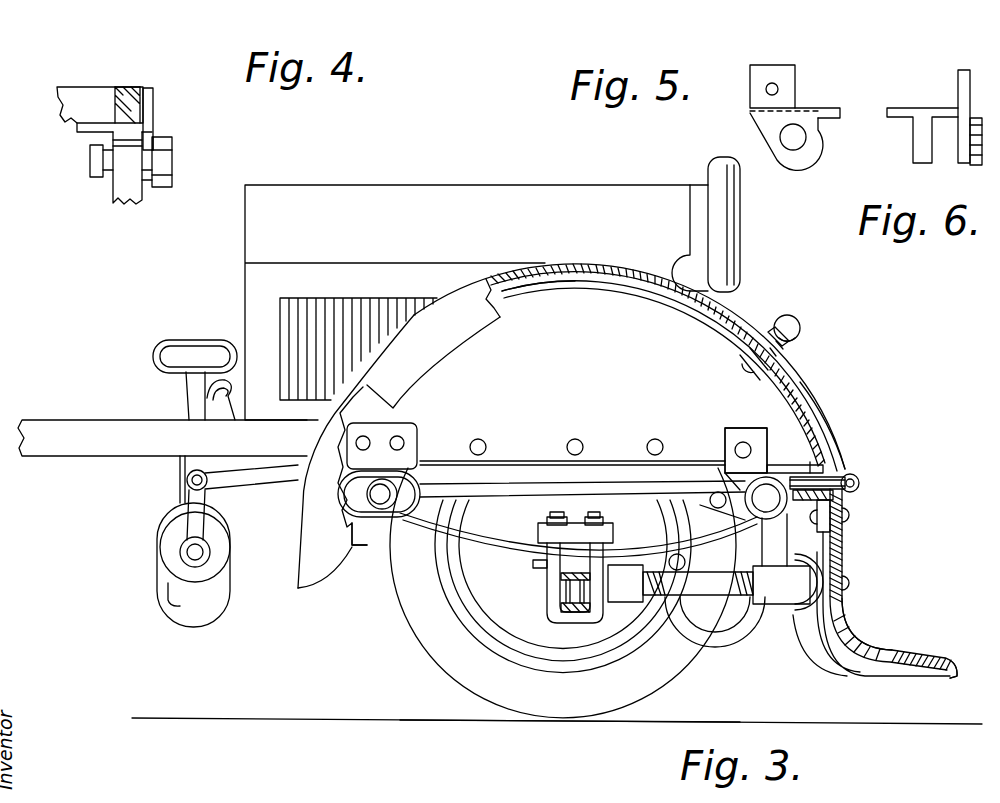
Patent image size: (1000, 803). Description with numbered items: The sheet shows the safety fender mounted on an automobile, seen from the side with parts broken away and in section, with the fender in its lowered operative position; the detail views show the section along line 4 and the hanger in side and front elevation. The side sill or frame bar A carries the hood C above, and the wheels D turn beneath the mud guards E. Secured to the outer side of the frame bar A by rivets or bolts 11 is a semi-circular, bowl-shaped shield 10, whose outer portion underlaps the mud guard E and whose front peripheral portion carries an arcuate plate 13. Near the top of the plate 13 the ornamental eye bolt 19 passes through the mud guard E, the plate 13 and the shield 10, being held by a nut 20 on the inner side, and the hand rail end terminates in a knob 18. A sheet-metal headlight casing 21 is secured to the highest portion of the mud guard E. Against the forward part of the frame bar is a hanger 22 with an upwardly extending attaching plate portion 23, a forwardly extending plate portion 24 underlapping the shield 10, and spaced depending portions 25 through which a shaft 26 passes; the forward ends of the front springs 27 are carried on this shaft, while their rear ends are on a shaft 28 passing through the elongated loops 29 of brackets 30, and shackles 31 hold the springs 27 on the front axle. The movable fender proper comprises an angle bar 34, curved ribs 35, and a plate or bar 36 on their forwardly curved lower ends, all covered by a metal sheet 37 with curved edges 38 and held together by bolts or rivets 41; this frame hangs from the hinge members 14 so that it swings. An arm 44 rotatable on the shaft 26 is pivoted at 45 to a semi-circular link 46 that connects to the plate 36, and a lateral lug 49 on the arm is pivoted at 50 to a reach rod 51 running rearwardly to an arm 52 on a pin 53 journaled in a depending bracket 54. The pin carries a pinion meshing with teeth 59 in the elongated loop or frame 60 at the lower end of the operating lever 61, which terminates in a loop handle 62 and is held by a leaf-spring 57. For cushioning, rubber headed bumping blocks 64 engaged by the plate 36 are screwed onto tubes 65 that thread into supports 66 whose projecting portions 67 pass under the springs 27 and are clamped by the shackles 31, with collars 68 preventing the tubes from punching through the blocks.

In FIG. 4, the side sills of automobile frame A is at (128, 87).
In FIG. 3, the side sills of automobile frame A is at (45, 428).
In FIG. 3, the hood C is at (407, 197).
In FIG. 3, the wheels D is at (568, 707).
In FIG. 3, the mud guards E is at (549, 272).
In FIG. 3, the section line 4— 4 is at (357, 413).
In FIG. 3, the shield 10 is at (571, 426).
In FIG. 3, the rivets or bolts 11 is at (487, 443).
In FIG. 3, the plate 13 is at (808, 407).
In FIG. 3, the hinge members 14 is at (858, 482).
In FIG. 3, the knobs 18 is at (795, 325).
In FIG. 3, the ornamental eye bolts 19 is at (784, 352).
In FIG. 3, the nut 20 is at (738, 358).
In FIG. 3, the headlight casings 21 is at (650, 205).
In FIG. 3, the hangers 22 is at (747, 419).
In FIG. 5, the attaching plate portion 23 is at (785, 75).
In FIG. 6, the attaching plate portion 23 is at (963, 70).
In FIG. 3, the attaching plate portion 23 is at (732, 435).
In FIG. 5, the forwardly extending plate portion 24 is at (832, 108).
In FIG. 6, the forwardly extending plate portion 24 is at (925, 108).
In FIG. 3, the forwardly extending plate portion 24 is at (784, 466).
In FIG. 5, the depending portions 25 is at (800, 158).
In FIG. 6, the depending portions 25 is at (975, 160).
In FIG. 3, the depending portions 25 is at (750, 484).
In FIG. 3, the shaft 26 is at (767, 503).
In FIG. 4, the front springs 27 is at (127, 185).
In FIG. 3, the front springs 27 is at (487, 538).
In FIG. 3, the shaft 28 is at (383, 499).
In FIG. 4, the elongated loops 29 is at (155, 157).
In FIG. 3, the elongated loops 29 is at (410, 477).
In FIG. 4, the brackets or hangers 30 is at (153, 98).
In FIG. 3, the brackets or hangers 30 is at (410, 438).
In FIG. 3, the shackles 31 is at (555, 598).
In FIG. 3, the angle bar 34 is at (843, 505).
In FIG. 3, the curved ribs 35 is at (828, 650).
In FIG. 3, the plate or bar 36 is at (812, 563).
In FIG. 3, the metal sheet 37 is at (852, 637).
In FIG. 3, the curved edges 38 is at (951, 662).
In FIG. 3, the bolts or rivets 41 is at (850, 518).
In FIG. 3, the arm 44 is at (729, 509).
In FIG. 3, the pivot 45 is at (688, 561).
In FIG. 3, the semi-circular link 46 is at (717, 628).
In FIG. 3, the lateral lug 49 is at (707, 505).
In FIG. 3, the pivot 50 is at (672, 466).
In FIG. 3, the reach rod 51 is at (270, 487).
In FIG. 3, the arm 52 is at (193, 505).
In FIG. 3, the pin 53 is at (190, 553).
In FIG. 3, the depending bracket 54 is at (180, 467).
In FIG. 3, the leaf-spring 57 is at (213, 408).
In FIG. 3, the teeth 59 is at (180, 593).
In FIG. 3, the elongated loop or frame 60 is at (213, 620).
In FIG. 3, the operating lever 61 is at (190, 402).
In FIG. 3, the loop handle 62 is at (170, 340).
In FIG. 3, the bumping blocks 64 is at (788, 582).
In FIG. 3, the tubes 65 is at (698, 584).
In FIG. 3, the supports 66 is at (625, 583).
In FIG. 3, the projecting portions 67 is at (536, 565).
In FIG. 3, the collars 68 is at (760, 606).